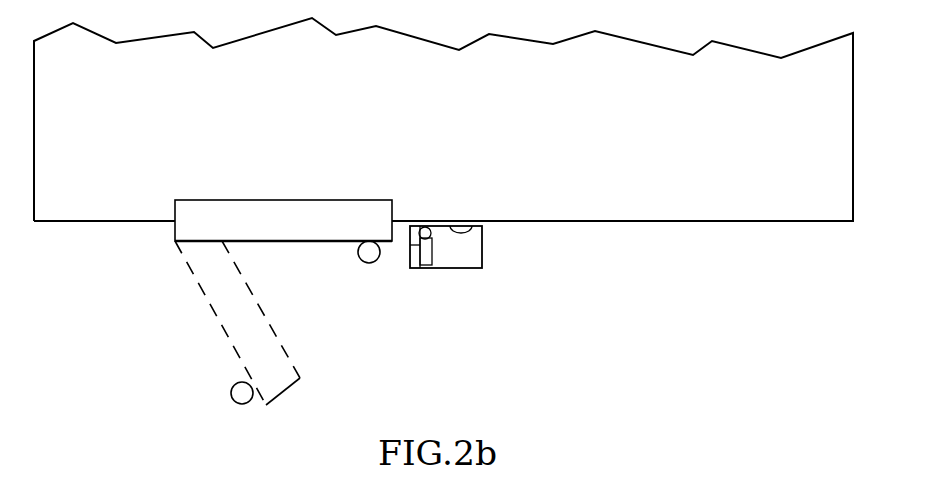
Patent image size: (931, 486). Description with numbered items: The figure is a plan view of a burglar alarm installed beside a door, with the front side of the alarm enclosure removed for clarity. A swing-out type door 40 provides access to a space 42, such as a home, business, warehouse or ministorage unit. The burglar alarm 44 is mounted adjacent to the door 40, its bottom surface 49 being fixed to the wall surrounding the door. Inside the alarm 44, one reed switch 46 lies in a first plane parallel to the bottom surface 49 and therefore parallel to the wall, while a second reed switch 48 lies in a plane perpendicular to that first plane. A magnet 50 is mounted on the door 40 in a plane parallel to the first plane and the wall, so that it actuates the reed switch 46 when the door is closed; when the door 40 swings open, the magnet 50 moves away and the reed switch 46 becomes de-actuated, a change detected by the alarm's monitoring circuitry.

The swing-out type door 40 is at (263, 215).
The space 42 is at (650, 115).
The burglar alarm 44 is at (501, 246).
The reed switch 46 is at (428, 232).
The reed switch 48 is at (426, 255).
The bottom surface 49 is at (464, 224).
The magnet 50 is at (366, 252).